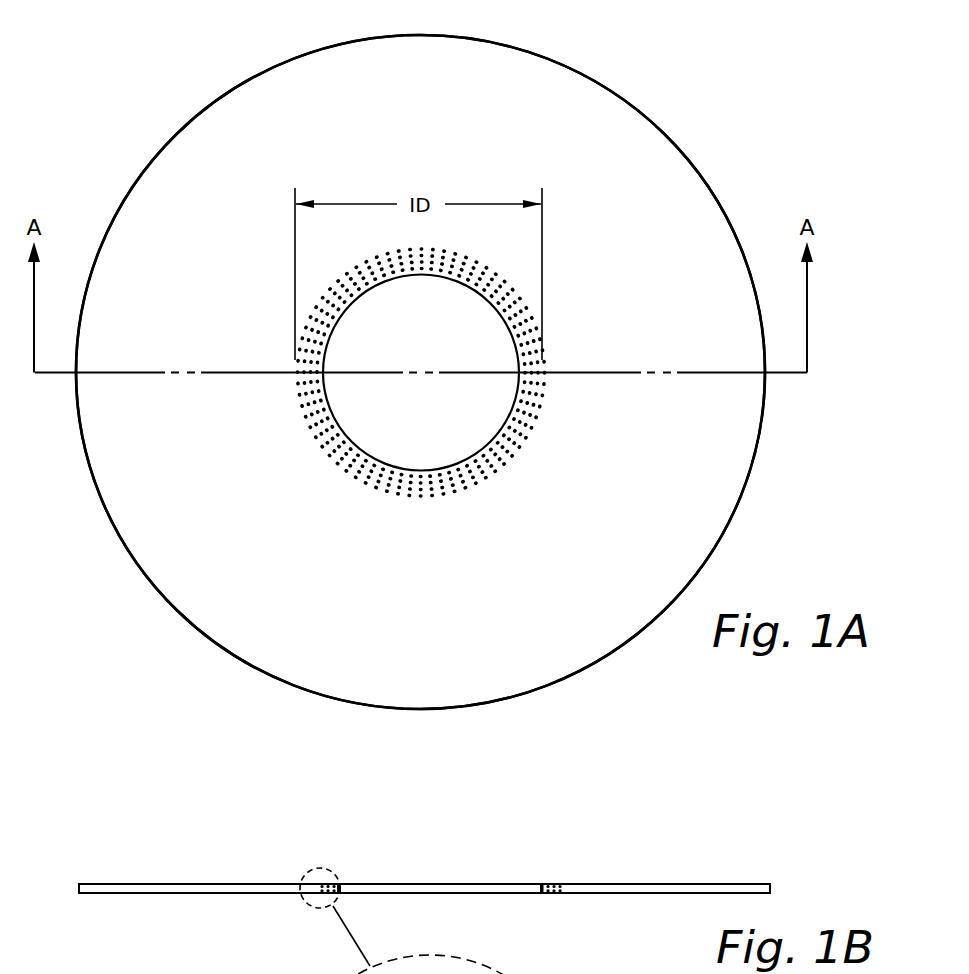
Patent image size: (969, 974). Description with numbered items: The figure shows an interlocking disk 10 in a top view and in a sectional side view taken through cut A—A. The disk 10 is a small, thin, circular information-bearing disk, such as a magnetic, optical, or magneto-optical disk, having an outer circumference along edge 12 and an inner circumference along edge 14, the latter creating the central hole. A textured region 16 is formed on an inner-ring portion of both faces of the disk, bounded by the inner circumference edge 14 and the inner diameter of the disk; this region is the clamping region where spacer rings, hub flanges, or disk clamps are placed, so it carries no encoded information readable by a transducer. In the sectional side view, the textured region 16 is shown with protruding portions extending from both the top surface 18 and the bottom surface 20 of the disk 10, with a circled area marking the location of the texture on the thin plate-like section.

In FIG. 1A, the disk 10 is at (743, 75).
In FIG. 1B, the disk 10 is at (745, 821).
In FIG. 1A, the edge 12 is at (721, 208).
In FIG. 1A, the edge 14 is at (365, 290).
In FIG. 1A, the textured region 16 is at (311, 474).
In FIG. 1B, the textured region 16 is at (297, 868).
In FIG. 1B, the top surface 18 is at (652, 884).
In FIG. 1B, the bottom surface 20 is at (652, 893).